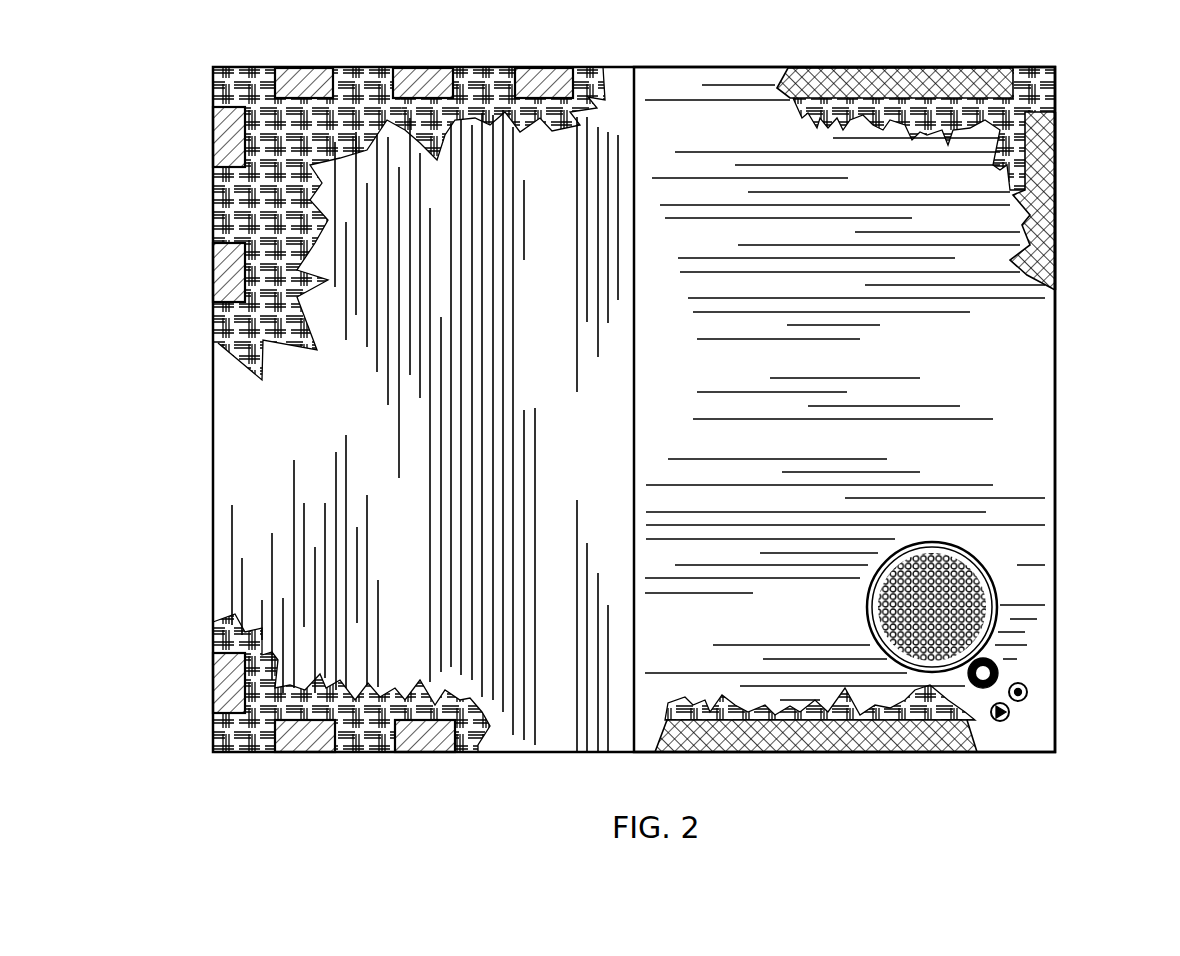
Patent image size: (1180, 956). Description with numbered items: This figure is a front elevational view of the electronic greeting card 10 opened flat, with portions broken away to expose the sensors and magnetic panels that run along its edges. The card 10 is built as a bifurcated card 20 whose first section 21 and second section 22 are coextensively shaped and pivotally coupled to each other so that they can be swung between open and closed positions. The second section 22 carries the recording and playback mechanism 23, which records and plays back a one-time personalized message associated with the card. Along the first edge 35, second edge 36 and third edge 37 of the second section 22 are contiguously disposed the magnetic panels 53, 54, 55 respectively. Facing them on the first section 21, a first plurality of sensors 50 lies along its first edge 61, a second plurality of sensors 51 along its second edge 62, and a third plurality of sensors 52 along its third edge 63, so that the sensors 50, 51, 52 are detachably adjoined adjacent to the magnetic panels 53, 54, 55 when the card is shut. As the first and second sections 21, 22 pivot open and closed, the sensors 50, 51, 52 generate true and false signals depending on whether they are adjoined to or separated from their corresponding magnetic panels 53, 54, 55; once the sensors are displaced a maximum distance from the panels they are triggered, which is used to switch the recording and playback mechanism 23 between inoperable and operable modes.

The electronic greeting card 10 is at (148, 804).
The bifurcated card 20 is at (1028, 356).
The first section 21 is at (555, 733).
The second section 22 is at (1032, 513).
The recording and playback mechanism 23 is at (1008, 592).
The first edge 35 is at (878, 67).
The second edge 36 is at (1053, 215).
The third edge 37 is at (868, 752).
The sensors 50 is at (290, 80).
The sensors 51 is at (233, 263).
The sensors 52 is at (423, 738).
The magnetic panel 53 is at (987, 80).
The magnetic panel 54 is at (1050, 132).
The magnetic panel 55 is at (912, 750).
The first edge 61 is at (360, 68).
The second edge 62 is at (218, 320).
The third edge 63 is at (490, 753).